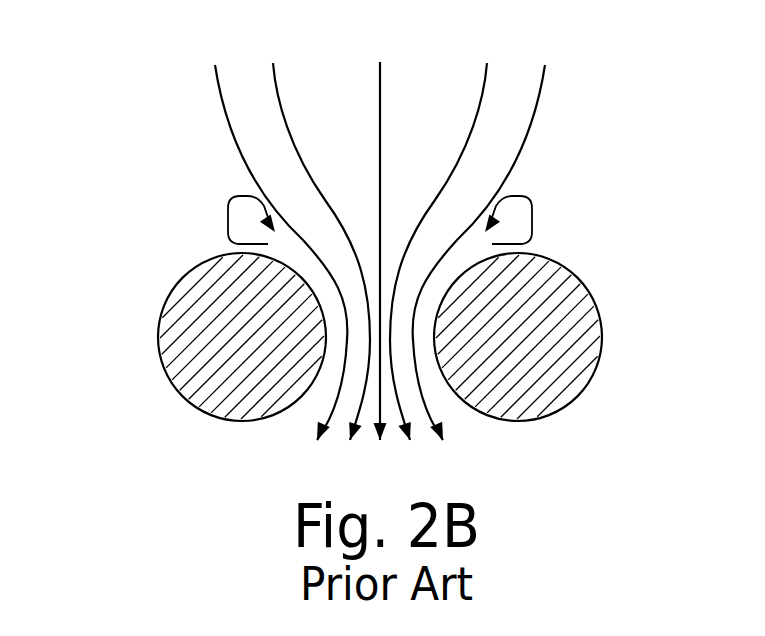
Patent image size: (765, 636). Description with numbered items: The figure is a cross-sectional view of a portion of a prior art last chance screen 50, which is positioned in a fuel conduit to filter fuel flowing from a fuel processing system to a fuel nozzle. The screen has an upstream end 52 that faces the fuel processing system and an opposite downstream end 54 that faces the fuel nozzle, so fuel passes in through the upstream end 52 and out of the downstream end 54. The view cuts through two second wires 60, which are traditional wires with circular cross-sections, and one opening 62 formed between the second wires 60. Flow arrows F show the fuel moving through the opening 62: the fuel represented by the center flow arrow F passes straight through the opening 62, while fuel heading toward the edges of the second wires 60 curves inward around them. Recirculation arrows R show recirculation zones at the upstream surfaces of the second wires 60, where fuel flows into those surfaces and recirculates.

The last chance screen 50 is at (130, 149).
The upstream end 52 is at (536, 240).
The downstream end 54 is at (538, 439).
The second wires 60 is at (207, 387).
The openings 62 is at (427, 348).
The flow arrows F is at (380, 120).
The recirculation arrows R is at (228, 218).